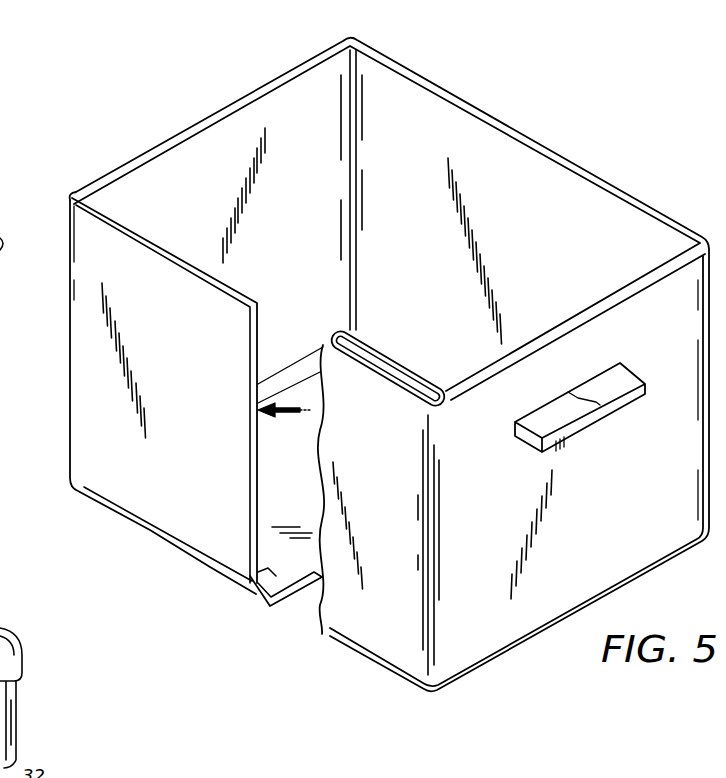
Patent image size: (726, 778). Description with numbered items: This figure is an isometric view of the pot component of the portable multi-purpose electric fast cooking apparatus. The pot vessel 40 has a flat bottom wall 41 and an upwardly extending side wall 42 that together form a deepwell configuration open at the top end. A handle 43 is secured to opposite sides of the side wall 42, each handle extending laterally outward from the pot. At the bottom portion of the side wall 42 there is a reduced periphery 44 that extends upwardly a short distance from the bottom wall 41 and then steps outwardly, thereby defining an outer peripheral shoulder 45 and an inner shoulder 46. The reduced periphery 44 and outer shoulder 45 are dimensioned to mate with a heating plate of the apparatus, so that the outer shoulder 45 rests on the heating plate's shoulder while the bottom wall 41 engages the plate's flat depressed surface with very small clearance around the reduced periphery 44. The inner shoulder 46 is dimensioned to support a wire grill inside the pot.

The pot vessel 40 is at (186, 537).
The flat bottom wall 41 is at (303, 484).
The side wall 42 is at (250, 458).
The handle 43 is at (575, 427).
The reduced periphery 44 is at (262, 602).
The outer peripheral shoulder 45 is at (253, 594).
The inner shoulder 46 is at (268, 569).